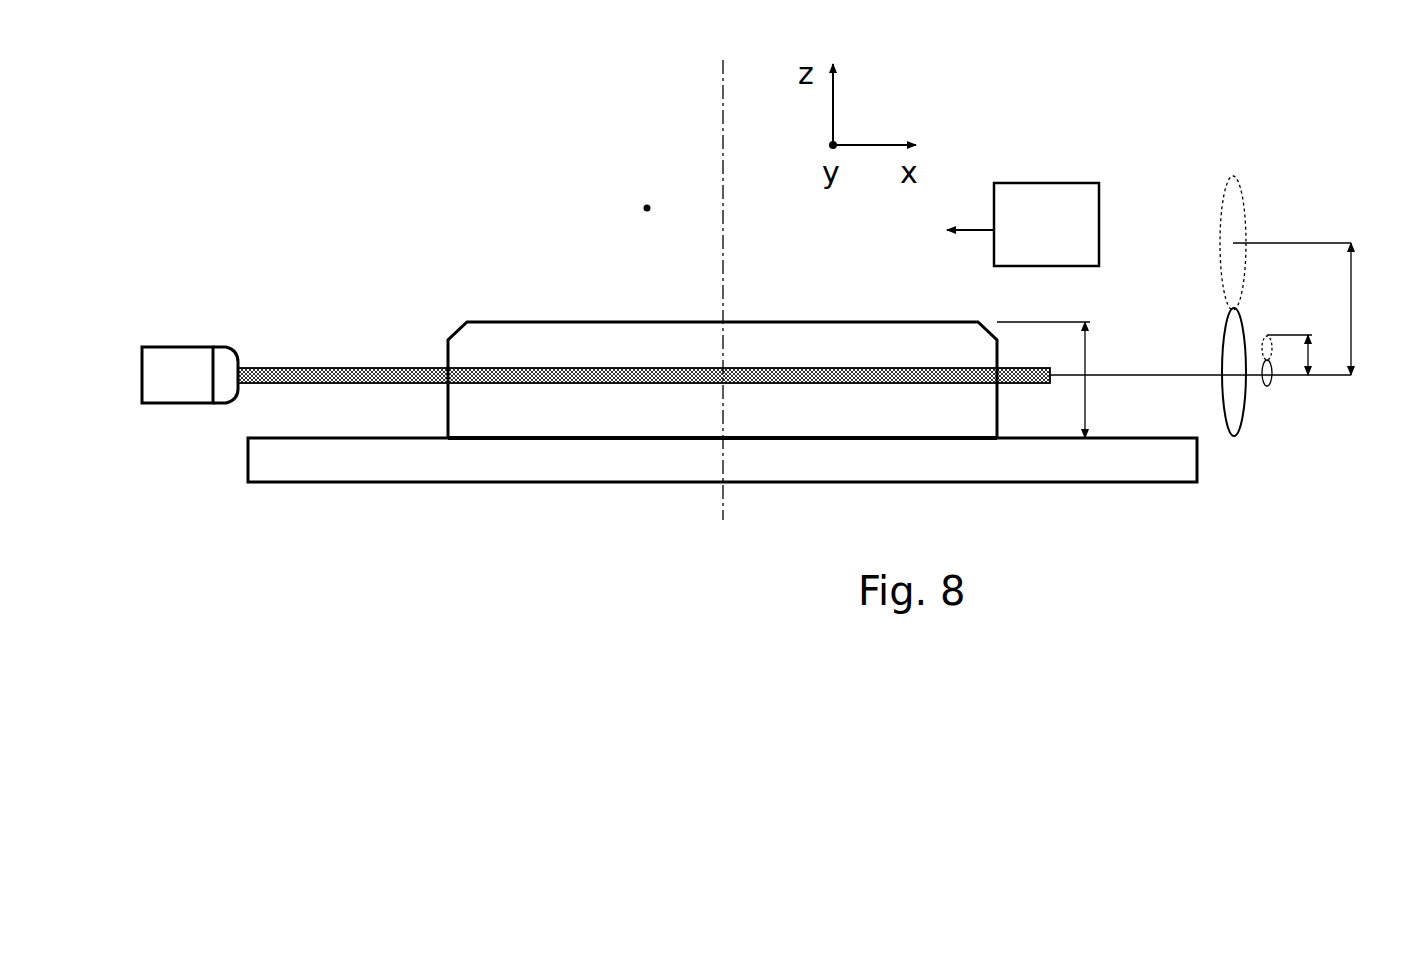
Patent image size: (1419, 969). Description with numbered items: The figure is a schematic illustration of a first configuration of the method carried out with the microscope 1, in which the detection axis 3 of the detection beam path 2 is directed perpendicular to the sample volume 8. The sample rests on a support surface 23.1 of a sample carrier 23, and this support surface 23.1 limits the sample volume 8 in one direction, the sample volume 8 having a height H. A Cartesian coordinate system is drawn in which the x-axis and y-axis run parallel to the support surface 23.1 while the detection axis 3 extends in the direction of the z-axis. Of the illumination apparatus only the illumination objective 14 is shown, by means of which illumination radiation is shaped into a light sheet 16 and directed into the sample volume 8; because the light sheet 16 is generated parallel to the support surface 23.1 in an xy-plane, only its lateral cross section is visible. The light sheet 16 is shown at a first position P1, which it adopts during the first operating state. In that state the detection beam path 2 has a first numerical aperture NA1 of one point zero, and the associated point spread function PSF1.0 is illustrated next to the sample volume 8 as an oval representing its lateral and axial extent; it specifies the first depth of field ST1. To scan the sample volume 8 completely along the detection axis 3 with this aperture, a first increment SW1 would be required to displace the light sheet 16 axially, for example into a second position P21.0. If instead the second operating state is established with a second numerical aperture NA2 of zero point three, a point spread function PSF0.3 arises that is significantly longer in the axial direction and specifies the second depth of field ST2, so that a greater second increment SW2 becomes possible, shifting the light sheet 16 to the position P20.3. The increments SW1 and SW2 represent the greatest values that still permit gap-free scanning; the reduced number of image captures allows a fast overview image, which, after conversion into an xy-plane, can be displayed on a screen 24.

The microscope 1 is at (497, 70).
The detection beam path 2 is at (566, 145).
The detection axis 3 is at (723, 130).
The sample volume 8 is at (582, 345).
The illumination objective 14 is at (193, 350).
The light sheet 16 is at (360, 368).
The sample carrier 23 is at (300, 471).
The support surface 23.1 is at (312, 435).
The screen 24 is at (1066, 241).
The first numerical aperture NA1 is at (647, 205).
The second numerical aperture NA2 is at (646, 127).
The height H is at (1086, 349).
The first position P1 is at (1190, 372).
The second position P21.0 is at (1290, 243).
The second position P20.3 is at (1315, 243).
The first increment SW1 is at (1310, 352).
The second increment SW2 is at (1356, 284).
The point spread function PSF1.0 is at (1271, 386).
The point spread function PSF0.3 is at (1241, 437).
The first depth of field ST1 is at (1304, 426).
The second depth of field ST2 is at (1225, 442).